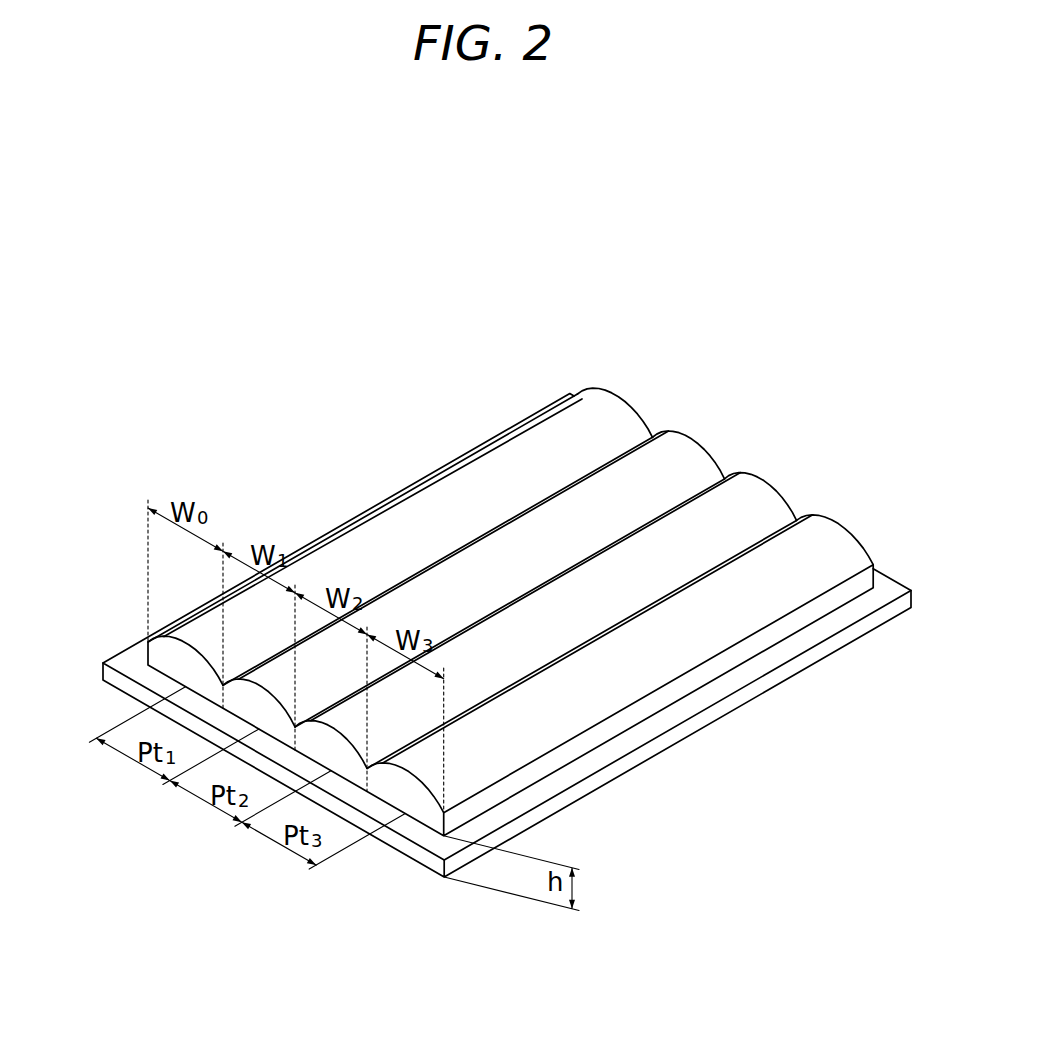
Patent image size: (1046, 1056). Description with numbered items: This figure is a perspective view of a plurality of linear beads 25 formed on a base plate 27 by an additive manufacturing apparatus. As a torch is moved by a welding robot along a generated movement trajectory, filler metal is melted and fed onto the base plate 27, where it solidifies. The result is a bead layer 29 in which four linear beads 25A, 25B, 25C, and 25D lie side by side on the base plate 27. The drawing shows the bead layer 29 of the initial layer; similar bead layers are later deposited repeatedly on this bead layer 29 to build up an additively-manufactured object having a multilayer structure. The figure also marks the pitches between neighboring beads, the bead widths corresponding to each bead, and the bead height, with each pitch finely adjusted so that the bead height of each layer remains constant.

The linear beads 25 is at (891, 424).
The linear bead 25A is at (610, 395).
The linear bead 25B is at (678, 440).
The linear bead 25C is at (752, 487).
The linear bead 25D is at (829, 528).
The base plate 27 is at (652, 758).
The bead layer 29 is at (452, 460).